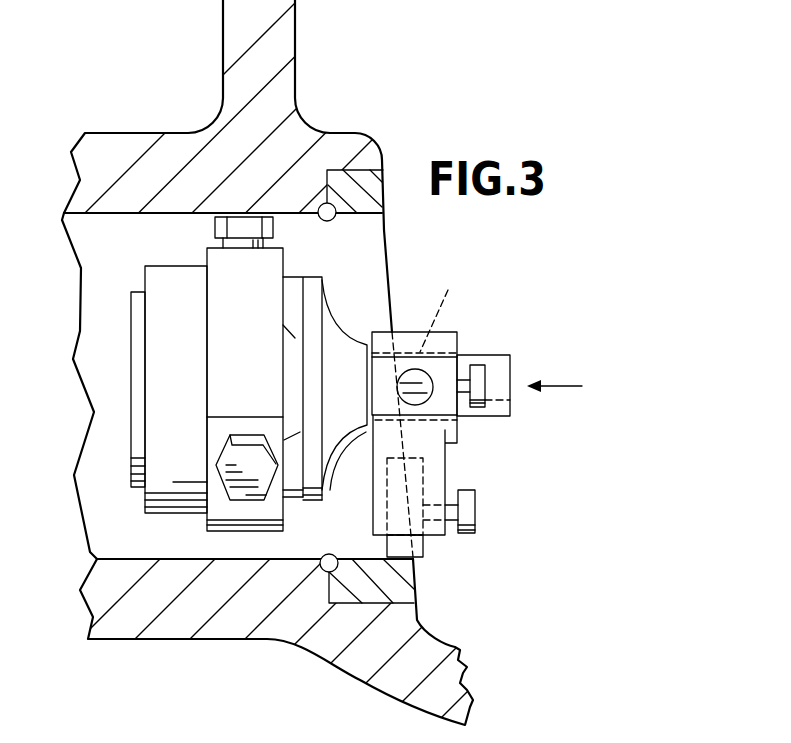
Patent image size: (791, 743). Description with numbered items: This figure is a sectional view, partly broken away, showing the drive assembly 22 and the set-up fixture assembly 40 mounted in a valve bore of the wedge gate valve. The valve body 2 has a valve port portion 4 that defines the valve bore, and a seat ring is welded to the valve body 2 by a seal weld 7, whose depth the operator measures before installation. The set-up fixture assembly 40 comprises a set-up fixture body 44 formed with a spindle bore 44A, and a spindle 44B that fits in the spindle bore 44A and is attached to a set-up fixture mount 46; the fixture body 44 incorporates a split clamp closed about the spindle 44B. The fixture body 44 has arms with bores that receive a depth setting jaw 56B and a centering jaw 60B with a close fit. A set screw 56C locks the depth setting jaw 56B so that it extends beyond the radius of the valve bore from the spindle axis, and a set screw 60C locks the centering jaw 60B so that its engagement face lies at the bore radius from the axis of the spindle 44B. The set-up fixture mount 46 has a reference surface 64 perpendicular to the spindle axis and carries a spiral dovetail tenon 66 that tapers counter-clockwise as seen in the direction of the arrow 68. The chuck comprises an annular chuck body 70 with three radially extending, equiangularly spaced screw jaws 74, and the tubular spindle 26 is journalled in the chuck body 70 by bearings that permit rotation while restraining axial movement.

The valve body 2 is at (241, 660).
The valve port portion 4 is at (188, 147).
The seal weld 7 is at (334, 221).
The drive assembly 22 is at (124, 520).
The spindle 26 is at (293, 300).
The set-up fixture assembly 40 is at (413, 312).
The set-up fixture body 44 is at (432, 328).
The spindle bore 44A is at (451, 305).
The spindle 44B is at (502, 420).
The set-up fixture mount 46 is at (352, 328).
The depth setting jaw 56B is at (418, 418).
The set screw 56C is at (485, 377).
The centering jaw 60B is at (425, 547).
The set screw 60C is at (477, 515).
The reference surface 64 is at (292, 500).
The spiral dovetail tenon 66 is at (295, 378).
The arrow 68 is at (553, 387).
The annular chuck body 70 is at (242, 340).
The screw jaw 74 is at (214, 232).